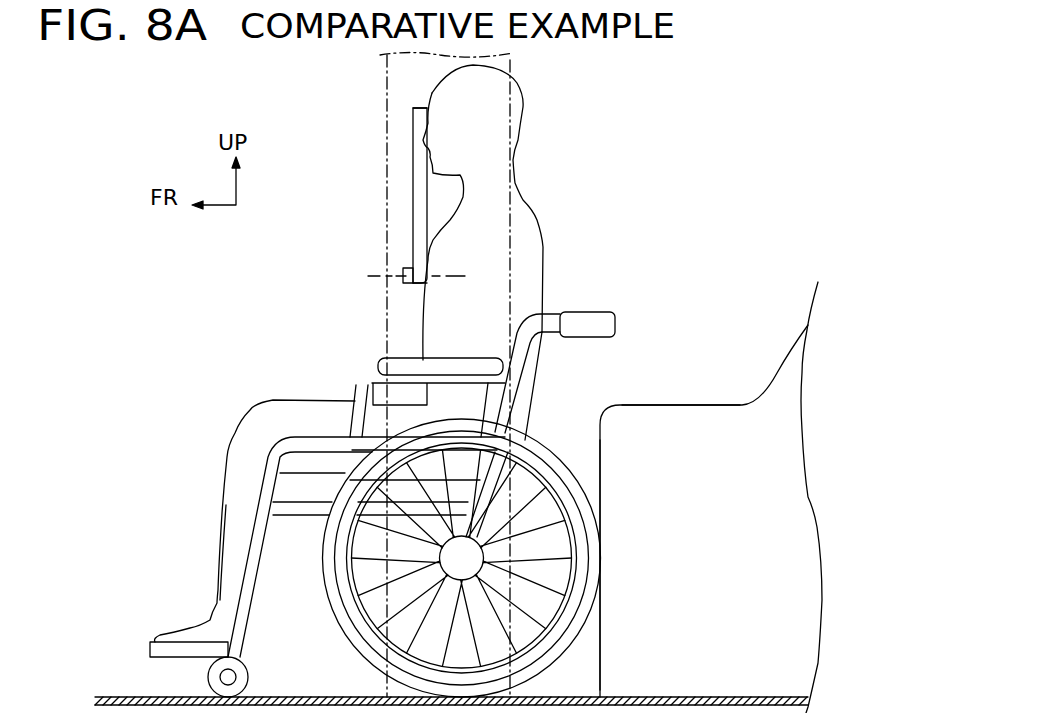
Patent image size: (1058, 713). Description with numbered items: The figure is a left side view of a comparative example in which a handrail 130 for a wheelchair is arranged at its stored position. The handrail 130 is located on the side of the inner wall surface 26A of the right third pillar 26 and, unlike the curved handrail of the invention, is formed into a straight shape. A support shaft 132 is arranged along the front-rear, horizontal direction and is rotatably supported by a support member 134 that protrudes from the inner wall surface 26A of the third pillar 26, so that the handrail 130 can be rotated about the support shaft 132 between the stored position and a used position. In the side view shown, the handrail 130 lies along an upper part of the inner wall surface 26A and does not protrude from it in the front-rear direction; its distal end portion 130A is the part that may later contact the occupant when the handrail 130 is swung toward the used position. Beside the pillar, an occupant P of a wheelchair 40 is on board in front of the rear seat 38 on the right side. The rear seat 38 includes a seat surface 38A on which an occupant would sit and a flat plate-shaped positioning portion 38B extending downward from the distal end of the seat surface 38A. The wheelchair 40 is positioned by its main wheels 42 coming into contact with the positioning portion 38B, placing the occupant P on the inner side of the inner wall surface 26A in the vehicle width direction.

The third pillar 26 is at (511, 64).
The inner wall surface 26A is at (390, 90).
The handrail 130 is at (367, 219).
The distal end portion 130A is at (418, 106).
The support shaft 132 is at (412, 287).
The support member 134 is at (405, 268).
The occupant P is at (523, 203).
The wheelchair 40 is at (602, 310).
The rear seat 38 is at (702, 482).
The seat surface 38A is at (675, 403).
The positioning portion 38B is at (601, 657).
The main wheel 42 is at (578, 480).